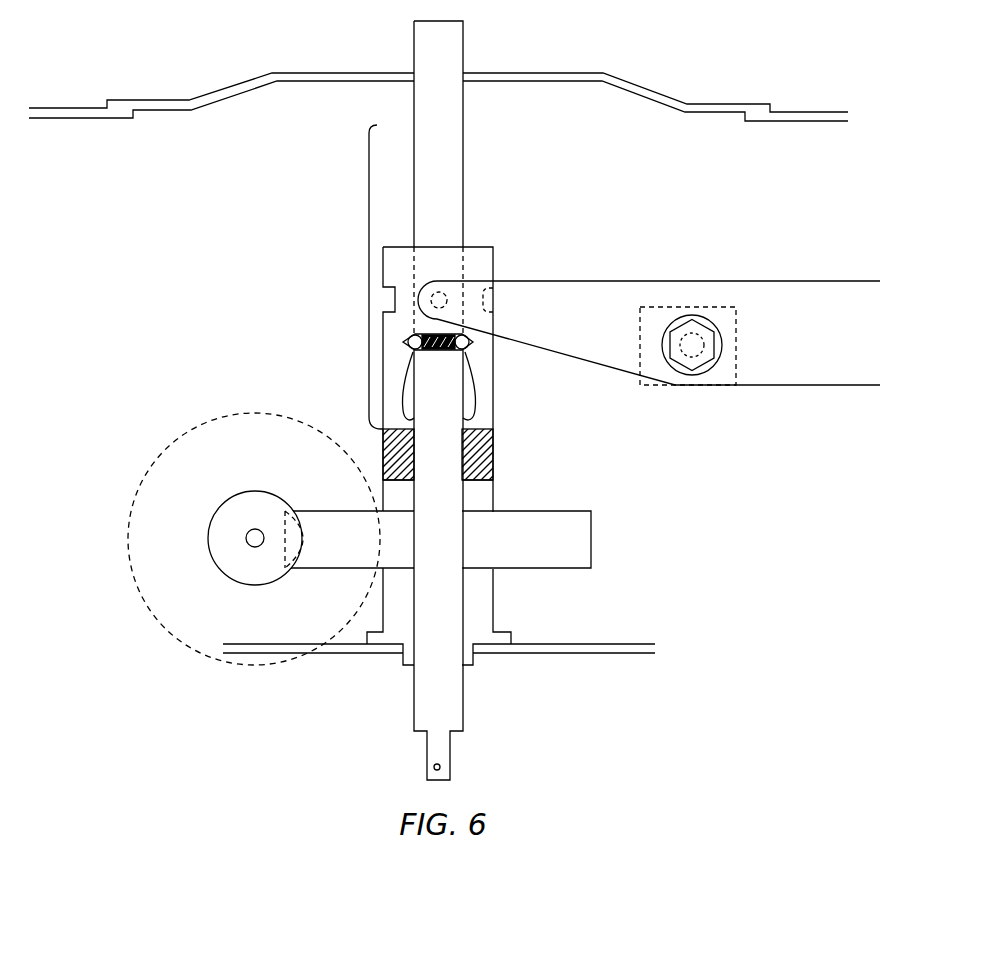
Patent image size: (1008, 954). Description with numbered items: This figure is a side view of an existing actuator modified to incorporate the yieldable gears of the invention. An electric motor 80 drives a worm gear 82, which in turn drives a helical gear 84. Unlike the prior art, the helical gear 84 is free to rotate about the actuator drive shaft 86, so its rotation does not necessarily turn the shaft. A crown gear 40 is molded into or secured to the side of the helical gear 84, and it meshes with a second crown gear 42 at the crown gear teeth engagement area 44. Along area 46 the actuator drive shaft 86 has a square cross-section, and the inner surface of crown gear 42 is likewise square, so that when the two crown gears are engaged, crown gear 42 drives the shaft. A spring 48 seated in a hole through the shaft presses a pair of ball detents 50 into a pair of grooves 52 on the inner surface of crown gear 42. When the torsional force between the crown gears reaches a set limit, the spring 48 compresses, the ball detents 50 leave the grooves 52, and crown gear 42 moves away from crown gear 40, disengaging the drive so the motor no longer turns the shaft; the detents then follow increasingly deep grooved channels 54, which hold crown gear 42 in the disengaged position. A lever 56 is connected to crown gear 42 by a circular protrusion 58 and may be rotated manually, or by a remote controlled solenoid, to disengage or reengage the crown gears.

The crown gear 40 is at (490, 502).
The crown gear 42 is at (495, 253).
The crown gear teeth engagement area 44 is at (488, 459).
The area of the actuator drive shaft 46 is at (369, 290).
The spring 48 is at (412, 331).
The ball detents 50 is at (415, 352).
The grooves 52 is at (473, 343).
The grooved channels 54 is at (467, 395).
The lever 56 is at (740, 288).
The circular protrusion 58 is at (431, 297).
The electric motor 80 is at (490, 301).
The worm gear 82 is at (215, 517).
The helical gear 84 is at (587, 542).
The actuator drive shaft 86 is at (453, 155).